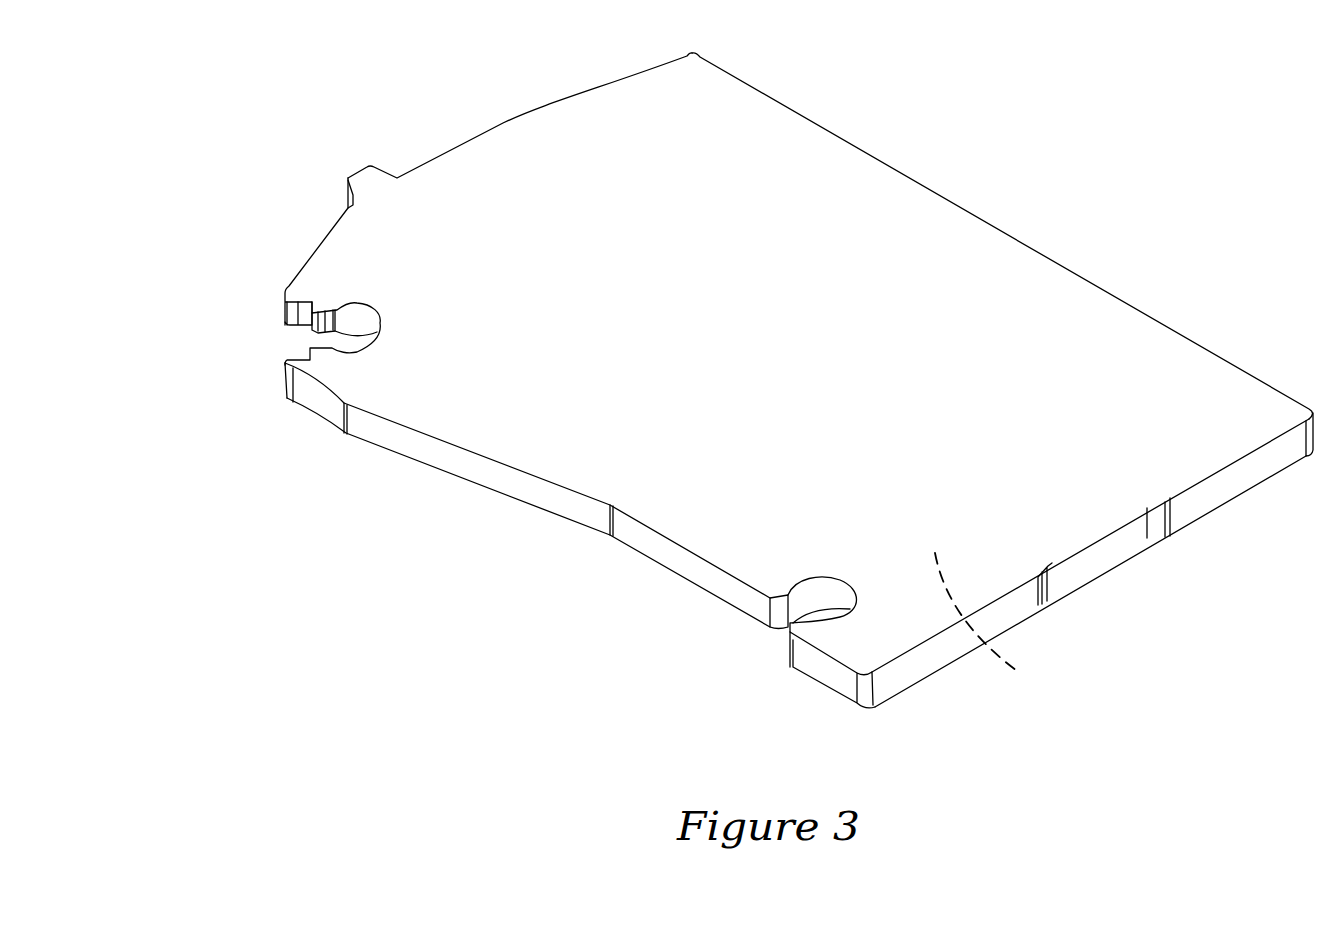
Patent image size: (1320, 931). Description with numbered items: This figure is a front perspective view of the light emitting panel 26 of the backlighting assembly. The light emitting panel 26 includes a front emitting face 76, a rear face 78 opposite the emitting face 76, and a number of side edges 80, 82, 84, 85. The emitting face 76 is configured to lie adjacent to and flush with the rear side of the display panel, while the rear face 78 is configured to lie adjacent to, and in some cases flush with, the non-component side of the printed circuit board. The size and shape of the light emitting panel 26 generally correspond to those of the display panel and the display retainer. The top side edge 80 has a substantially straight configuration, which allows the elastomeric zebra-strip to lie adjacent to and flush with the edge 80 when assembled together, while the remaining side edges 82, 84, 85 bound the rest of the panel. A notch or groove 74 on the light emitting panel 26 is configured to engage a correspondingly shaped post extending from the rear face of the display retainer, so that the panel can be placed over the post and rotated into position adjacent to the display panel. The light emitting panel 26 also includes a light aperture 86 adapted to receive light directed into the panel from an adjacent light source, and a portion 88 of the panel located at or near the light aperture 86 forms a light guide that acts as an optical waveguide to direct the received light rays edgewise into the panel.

The light emitting panel 26 is at (742, 380).
The notch or groove 74 is at (823, 597).
The front emitting face 76 is at (742, 380).
The rear face 78 is at (1020, 673).
The top side edge 80 is at (1004, 230).
The side edge 82 is at (542, 493).
The side edge 84 is at (502, 123).
The side edge 85 is at (1093, 553).
The light aperture 86 is at (292, 341).
The light guide portion 88 is at (367, 297).